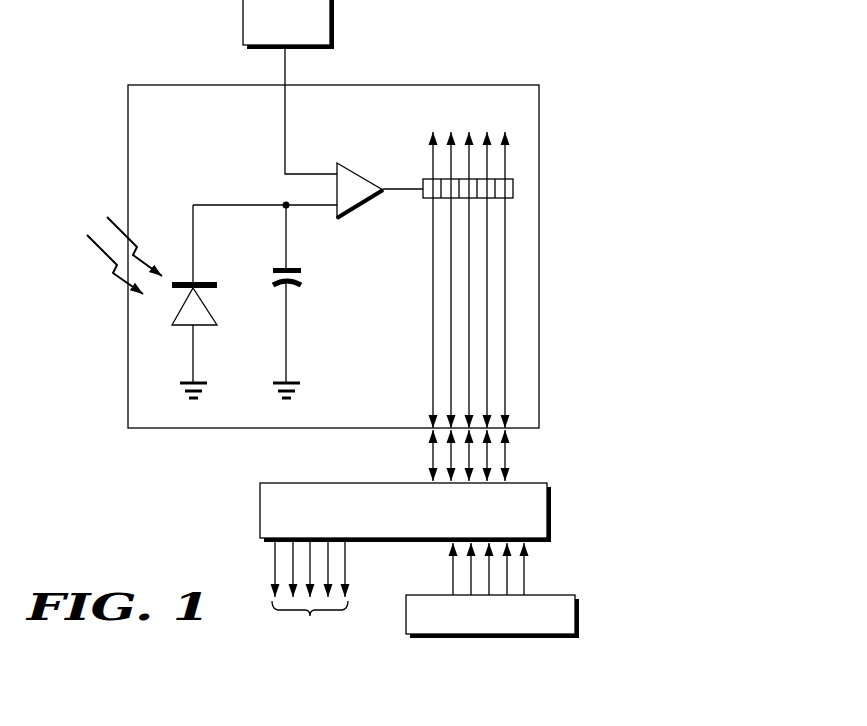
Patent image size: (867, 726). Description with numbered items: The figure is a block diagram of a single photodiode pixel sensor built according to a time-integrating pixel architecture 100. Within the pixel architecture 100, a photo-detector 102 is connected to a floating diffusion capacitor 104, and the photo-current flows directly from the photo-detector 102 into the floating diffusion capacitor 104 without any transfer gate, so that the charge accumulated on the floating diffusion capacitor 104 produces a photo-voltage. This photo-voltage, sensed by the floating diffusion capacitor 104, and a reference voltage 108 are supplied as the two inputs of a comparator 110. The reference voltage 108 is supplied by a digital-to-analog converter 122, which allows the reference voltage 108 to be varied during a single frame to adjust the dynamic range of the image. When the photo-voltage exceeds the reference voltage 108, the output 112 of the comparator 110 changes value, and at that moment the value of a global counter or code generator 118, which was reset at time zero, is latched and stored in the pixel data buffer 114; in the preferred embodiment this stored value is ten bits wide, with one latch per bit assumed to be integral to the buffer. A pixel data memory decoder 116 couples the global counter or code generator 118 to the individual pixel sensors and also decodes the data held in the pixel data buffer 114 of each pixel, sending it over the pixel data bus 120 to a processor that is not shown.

The time-integrating pixel architecture 100 is at (440, 85).
The photo-detector 102 is at (205, 283).
The floating diffusion capacitor 104 is at (303, 279).
The reference voltage 108 is at (285, 131).
The comparator 110 is at (372, 176).
The comparator output 112 is at (401, 191).
The pixel data buffer 114 is at (513, 179).
The pixel data memory decoder 116 is at (260, 513).
The global counter or code generator 118 is at (580, 619).
The pixel data bus to processor 120 is at (274, 567).
The digital to analog converter (DAC) 122 is at (334, 25).